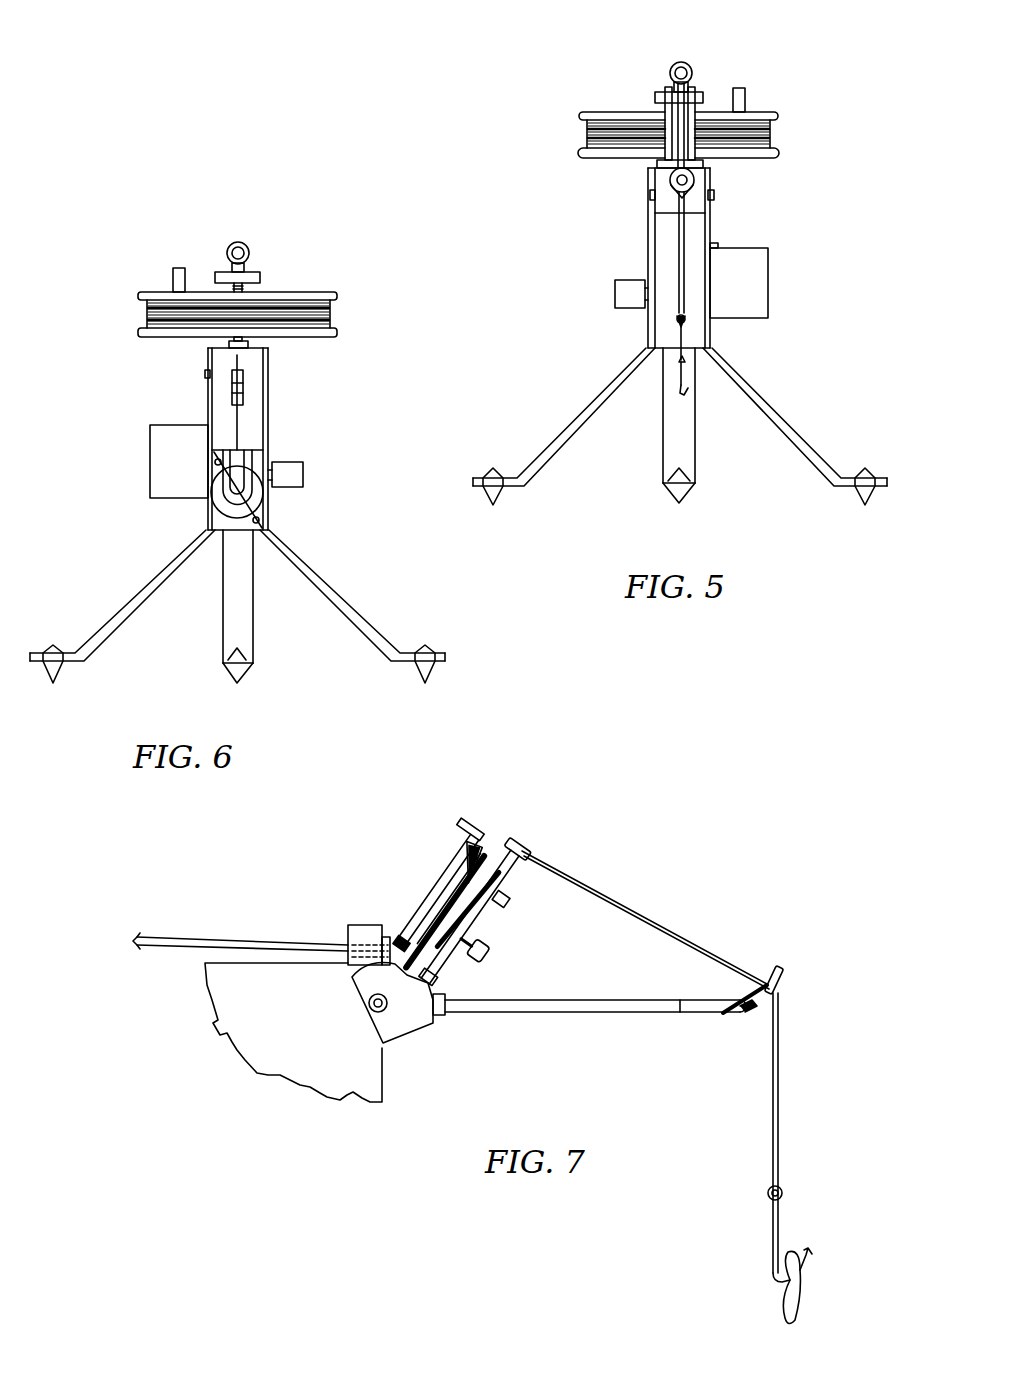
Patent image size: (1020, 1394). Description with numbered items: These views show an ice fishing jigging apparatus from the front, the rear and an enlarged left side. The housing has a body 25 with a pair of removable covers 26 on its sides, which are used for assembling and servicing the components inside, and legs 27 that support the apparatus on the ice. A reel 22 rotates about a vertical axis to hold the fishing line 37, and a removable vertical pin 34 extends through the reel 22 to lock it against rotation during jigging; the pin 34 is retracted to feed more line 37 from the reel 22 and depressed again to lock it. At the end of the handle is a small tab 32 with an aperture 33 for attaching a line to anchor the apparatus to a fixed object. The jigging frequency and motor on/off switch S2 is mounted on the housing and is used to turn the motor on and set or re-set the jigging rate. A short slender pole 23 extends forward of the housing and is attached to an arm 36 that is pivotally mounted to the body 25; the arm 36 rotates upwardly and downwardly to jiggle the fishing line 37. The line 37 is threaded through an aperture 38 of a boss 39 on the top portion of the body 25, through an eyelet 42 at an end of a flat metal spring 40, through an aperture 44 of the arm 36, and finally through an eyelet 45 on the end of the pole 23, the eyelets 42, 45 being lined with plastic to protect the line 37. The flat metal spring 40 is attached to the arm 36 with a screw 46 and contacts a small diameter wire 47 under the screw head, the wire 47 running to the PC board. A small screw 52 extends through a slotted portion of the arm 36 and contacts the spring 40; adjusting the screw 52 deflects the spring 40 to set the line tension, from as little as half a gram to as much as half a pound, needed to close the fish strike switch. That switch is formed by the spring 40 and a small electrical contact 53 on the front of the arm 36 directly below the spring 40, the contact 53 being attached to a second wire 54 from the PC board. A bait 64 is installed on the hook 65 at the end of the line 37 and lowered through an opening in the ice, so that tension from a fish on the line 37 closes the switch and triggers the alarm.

In FIG. 6, the reel 22 is at (245, 297).
In FIG. 5, the reel 22 is at (705, 153).
In FIG. 7, the short slender pole 23 is at (589, 1033).
In FIG. 5, the body 25 is at (627, 258).
In FIG. 6, the removable covers 26 is at (243, 433).
In FIG. 5, the removable covers 26 is at (678, 269).
In FIG. 6, the legs 27 is at (237, 606).
In FIG. 5, the legs 27 is at (680, 426).
In FIG. 6, the tab 32 is at (284, 401).
In FIG. 6, the aperture 33 is at (191, 371).
In FIG. 6, the vertical pin 34 is at (132, 245).
In FIG. 5, the vertical pin 34 is at (773, 81).
In FIG. 7, the arm 36 is at (533, 896).
In FIG. 5, the fishing line 37 is at (643, 198).
In FIG. 7, the fishing line 37 is at (645, 920).
In FIG. 7, the aperture 38 is at (353, 977).
In FIG. 7, the boss 39 is at (341, 914).
In FIG. 7, the flat metal spring 40 is at (385, 831).
In FIG. 6, the eyelet 42 is at (214, 253).
In FIG. 5, the eyelet 42 is at (648, 46).
In FIG. 7, the eyelet 42 is at (511, 769).
In FIG. 5, the aperture 44 is at (652, 106).
In FIG. 5, the eyelet 45 is at (720, 200).
In FIG. 7, the eyelet 45 is at (793, 1087).
In FIG. 7, the screw 46 is at (355, 869).
In FIG. 7, the small diameter wire 47 is at (454, 1043).
In FIG. 7, the screw 52 is at (539, 1003).
In FIG. 7, the electrical contact 53 is at (519, 826).
In FIG. 7, the second wire 54 is at (531, 927).
In FIG. 5, the bait 64 is at (652, 372).
In FIG. 7, the bait 64 is at (762, 1272).
In FIG. 5, the hook 65 is at (715, 390).
In FIG. 7, the hook 65 is at (837, 1303).
In FIG. 6, the jigging frequency and motor on/off switch S2 is at (317, 496).
In FIG. 5, the jigging frequency and motor on/off switch S2 is at (596, 303).